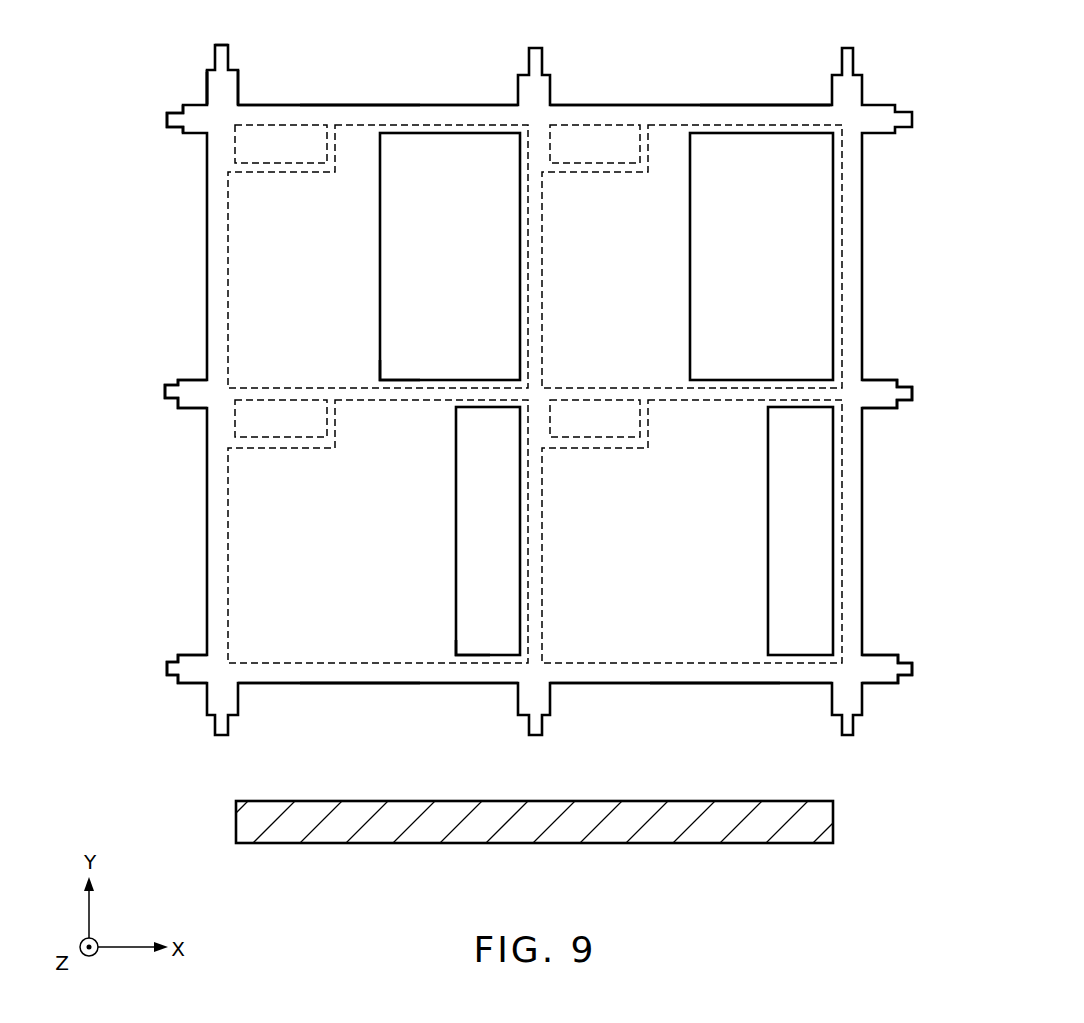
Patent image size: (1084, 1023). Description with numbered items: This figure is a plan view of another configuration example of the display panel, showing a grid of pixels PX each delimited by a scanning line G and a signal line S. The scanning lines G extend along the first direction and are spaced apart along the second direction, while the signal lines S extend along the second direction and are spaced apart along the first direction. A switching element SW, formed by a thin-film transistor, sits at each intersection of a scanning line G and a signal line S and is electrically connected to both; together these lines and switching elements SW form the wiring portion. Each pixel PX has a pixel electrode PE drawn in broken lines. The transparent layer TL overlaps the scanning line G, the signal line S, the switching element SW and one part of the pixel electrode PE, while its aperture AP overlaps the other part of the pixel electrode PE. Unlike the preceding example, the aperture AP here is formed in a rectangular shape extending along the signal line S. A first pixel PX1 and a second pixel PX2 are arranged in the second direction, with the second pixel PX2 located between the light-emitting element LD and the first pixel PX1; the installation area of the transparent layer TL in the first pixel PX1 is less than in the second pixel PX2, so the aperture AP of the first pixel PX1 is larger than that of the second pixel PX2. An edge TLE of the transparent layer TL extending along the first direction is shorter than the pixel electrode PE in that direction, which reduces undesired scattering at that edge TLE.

The signal line S is at (535, 56).
The scanning line G is at (172, 392).
The transparent layer TL is at (216, 88).
The pixel PX is at (772, 112).
The first pixel PX1 is at (367, 112).
The second pixel PX2 is at (372, 680).
The aperture AP is at (452, 162).
The pixel electrode PE is at (228, 231).
The switching element SW is at (615, 122).
The edge of transparent layer TLE is at (405, 370).
The light-emitting element LD is at (827, 822).